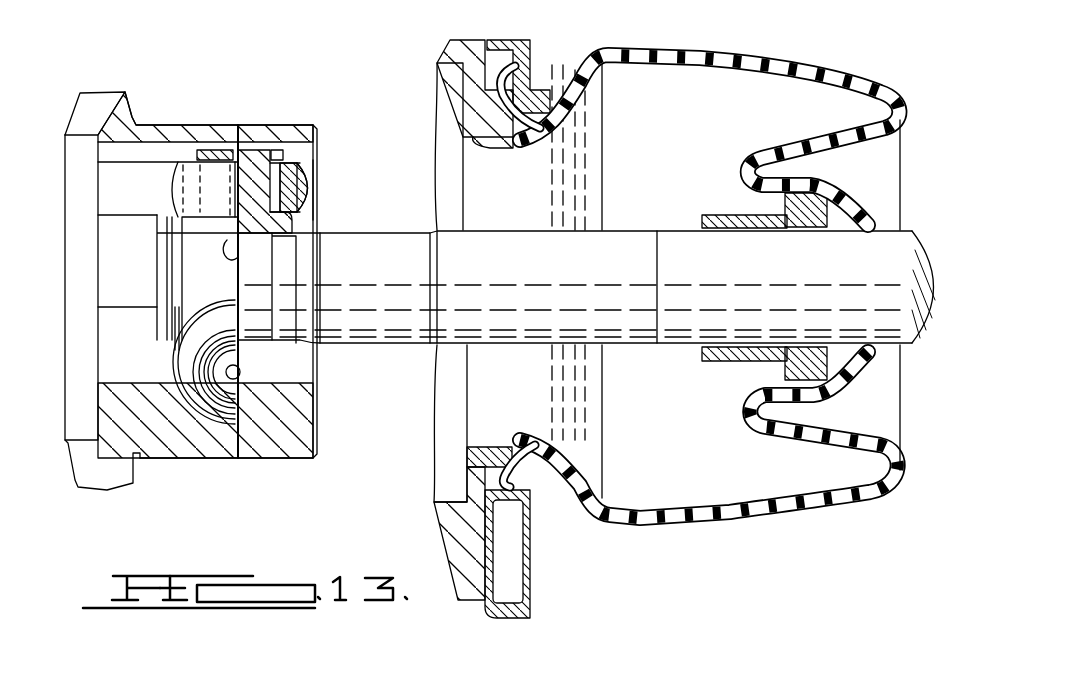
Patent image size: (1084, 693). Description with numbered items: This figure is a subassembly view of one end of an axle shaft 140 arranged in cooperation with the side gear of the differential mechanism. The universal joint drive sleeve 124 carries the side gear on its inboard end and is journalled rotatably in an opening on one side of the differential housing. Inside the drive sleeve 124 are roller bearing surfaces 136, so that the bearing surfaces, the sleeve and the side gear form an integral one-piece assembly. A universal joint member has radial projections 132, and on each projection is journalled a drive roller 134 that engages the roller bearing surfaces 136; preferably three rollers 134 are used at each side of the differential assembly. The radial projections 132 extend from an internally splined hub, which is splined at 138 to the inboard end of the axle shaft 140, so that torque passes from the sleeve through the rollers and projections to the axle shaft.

The universal joint drive sleeve 124 is at (153, 137).
The radial projections 132 is at (260, 188).
The drive roller 134 is at (183, 173).
The roller bearing surfaces 136 is at (130, 178).
The splines 138 is at (262, 300).
The axle shaft 140 is at (568, 330).